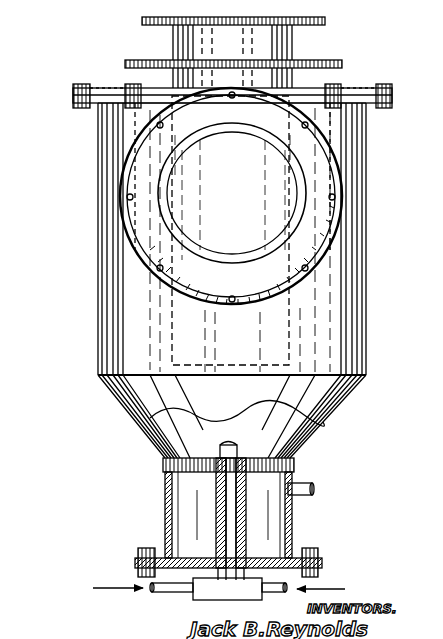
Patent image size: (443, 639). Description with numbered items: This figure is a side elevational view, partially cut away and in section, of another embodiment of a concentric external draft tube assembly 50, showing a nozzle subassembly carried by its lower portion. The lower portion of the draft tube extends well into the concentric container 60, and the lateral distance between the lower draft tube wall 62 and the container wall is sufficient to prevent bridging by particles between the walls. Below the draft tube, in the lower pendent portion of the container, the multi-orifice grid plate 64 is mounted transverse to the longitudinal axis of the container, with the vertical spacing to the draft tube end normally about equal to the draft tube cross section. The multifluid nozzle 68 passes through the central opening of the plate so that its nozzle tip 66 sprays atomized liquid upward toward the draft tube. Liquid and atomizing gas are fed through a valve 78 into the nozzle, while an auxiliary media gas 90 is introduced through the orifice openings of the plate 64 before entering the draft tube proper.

The draft tube assembly 50 is at (88, 320).
The concentric container 60 is at (365, 334).
The lower draft tube wall 62 is at (170, 200).
The multi-orifice grid plate 64 is at (288, 463).
The nozzle tip 66 is at (225, 445).
The multifluid nozzle 68 is at (228, 515).
The auxiliary media gas 90 is at (332, 488).
The valve 78 is at (203, 598).